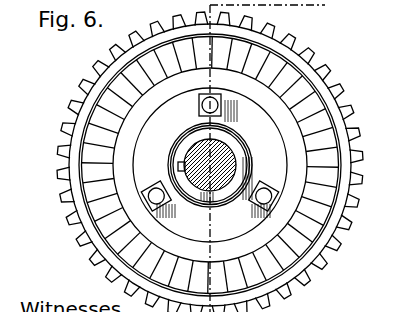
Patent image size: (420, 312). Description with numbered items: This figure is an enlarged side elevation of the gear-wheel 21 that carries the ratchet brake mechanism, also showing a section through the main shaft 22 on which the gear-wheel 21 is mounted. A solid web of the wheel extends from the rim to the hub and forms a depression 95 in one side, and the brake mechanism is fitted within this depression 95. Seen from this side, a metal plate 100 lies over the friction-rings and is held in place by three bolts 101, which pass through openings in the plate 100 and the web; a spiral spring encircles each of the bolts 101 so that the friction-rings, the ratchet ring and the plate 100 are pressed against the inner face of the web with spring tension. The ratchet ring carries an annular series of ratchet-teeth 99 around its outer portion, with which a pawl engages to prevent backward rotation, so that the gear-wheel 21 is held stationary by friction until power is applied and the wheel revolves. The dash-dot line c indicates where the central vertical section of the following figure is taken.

The gear-wheel 21 is at (214, 160).
The shaft 22 is at (190, 150).
The depression 95 is at (342, 193).
The ratchet-teeth 99 is at (97, 168).
The metal plate 100 is at (246, 146).
The bolts 101 is at (199, 105).
The section line c c is at (271, 158).